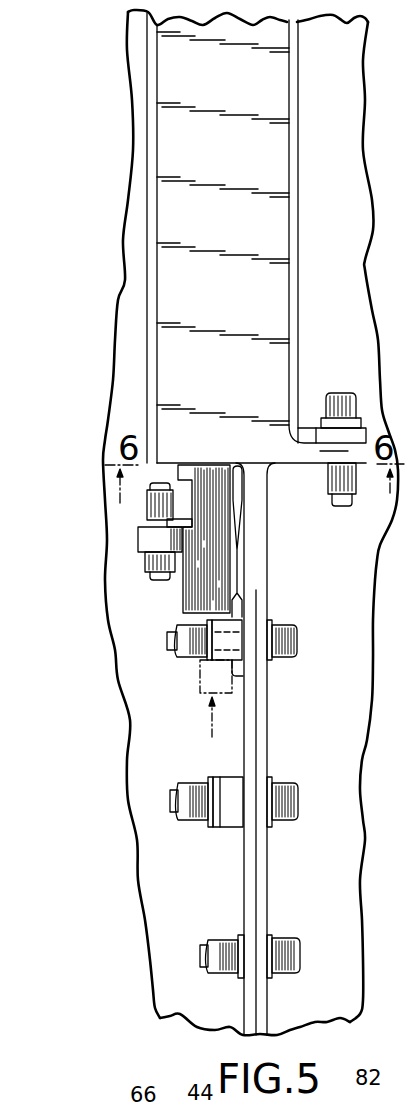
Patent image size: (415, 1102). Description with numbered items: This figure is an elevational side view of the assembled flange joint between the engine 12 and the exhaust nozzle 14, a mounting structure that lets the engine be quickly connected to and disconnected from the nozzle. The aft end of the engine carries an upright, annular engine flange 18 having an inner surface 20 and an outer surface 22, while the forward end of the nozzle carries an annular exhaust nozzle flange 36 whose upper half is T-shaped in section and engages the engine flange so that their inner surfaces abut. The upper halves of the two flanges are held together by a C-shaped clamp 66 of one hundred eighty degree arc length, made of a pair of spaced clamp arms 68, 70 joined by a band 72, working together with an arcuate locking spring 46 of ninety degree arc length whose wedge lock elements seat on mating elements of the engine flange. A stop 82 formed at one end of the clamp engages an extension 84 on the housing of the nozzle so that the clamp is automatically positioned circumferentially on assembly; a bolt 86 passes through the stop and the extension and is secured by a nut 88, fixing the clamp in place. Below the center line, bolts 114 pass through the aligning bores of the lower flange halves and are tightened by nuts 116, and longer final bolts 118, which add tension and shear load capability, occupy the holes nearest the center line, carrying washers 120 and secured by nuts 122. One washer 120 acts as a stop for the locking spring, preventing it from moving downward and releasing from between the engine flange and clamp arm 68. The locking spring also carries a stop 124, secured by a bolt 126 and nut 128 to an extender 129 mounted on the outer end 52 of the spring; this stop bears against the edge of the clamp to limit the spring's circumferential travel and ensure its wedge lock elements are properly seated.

The engine 12 is at (168, 1008).
The exhaust nozzle 14 is at (345, 1001).
The engine flange 18 is at (243, 889).
The inner surface 20 is at (262, 840).
The outer surface 22 is at (243, 842).
The exhaust nozzle flange 36 is at (270, 742).
The locking spring 46 is at (213, 475).
The outer end 52 is at (215, 570).
The C-shaped clamp 66 is at (246, 216).
The clamp arm 68 is at (140, 280).
The clamp arm 70 is at (302, 294).
The band 72 is at (238, 172).
The stop 82 is at (330, 464).
The extension 84 is at (291, 438).
The bolt 86 is at (347, 393).
The nut 88 is at (356, 496).
The bolts 114 is at (300, 944).
The nuts 116 is at (220, 938).
The final bolts 118 is at (300, 638).
The washers 120 is at (244, 678).
The nuts 122 is at (180, 630).
The stop 124 is at (182, 466).
The bolt 126 is at (165, 581).
The nut 128 is at (147, 500).
The extender 129 is at (147, 536).